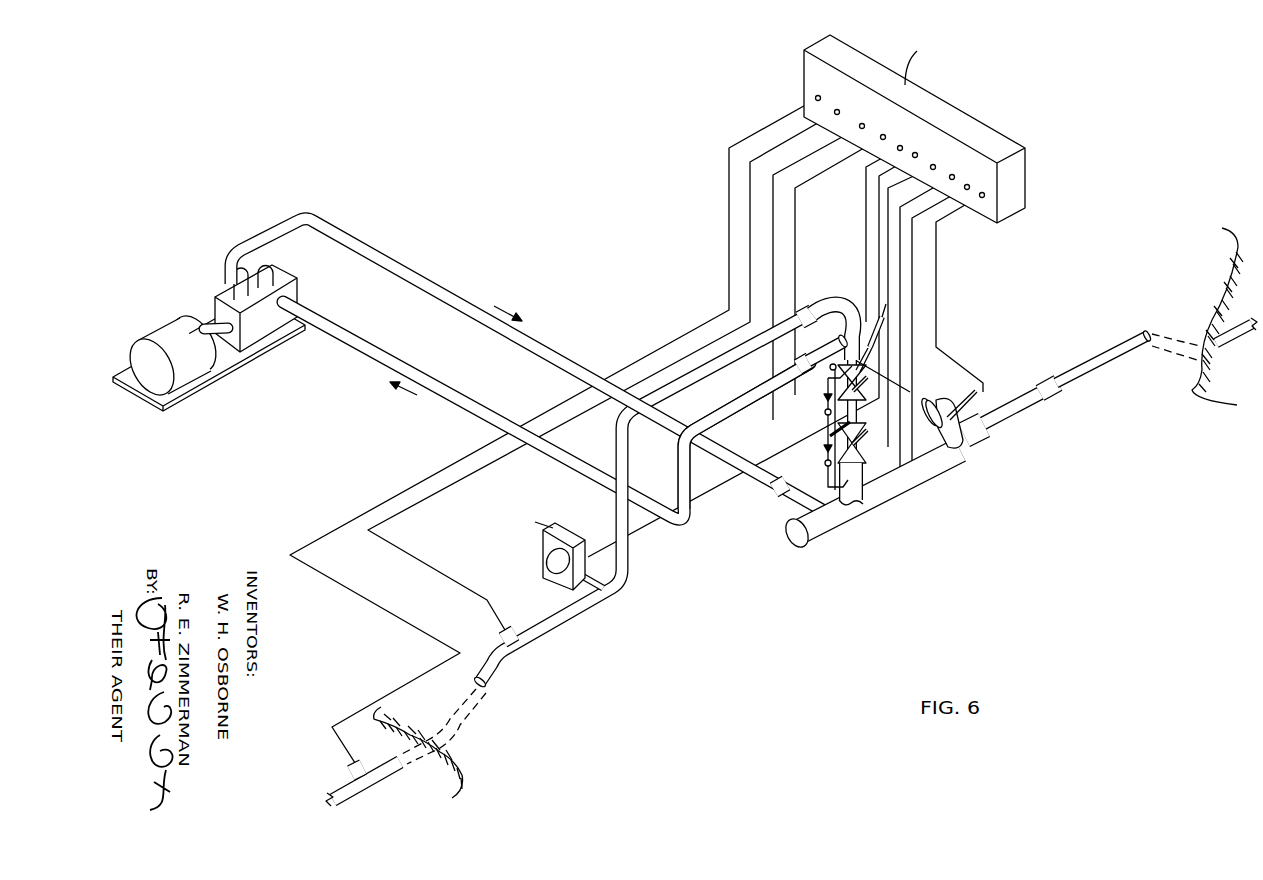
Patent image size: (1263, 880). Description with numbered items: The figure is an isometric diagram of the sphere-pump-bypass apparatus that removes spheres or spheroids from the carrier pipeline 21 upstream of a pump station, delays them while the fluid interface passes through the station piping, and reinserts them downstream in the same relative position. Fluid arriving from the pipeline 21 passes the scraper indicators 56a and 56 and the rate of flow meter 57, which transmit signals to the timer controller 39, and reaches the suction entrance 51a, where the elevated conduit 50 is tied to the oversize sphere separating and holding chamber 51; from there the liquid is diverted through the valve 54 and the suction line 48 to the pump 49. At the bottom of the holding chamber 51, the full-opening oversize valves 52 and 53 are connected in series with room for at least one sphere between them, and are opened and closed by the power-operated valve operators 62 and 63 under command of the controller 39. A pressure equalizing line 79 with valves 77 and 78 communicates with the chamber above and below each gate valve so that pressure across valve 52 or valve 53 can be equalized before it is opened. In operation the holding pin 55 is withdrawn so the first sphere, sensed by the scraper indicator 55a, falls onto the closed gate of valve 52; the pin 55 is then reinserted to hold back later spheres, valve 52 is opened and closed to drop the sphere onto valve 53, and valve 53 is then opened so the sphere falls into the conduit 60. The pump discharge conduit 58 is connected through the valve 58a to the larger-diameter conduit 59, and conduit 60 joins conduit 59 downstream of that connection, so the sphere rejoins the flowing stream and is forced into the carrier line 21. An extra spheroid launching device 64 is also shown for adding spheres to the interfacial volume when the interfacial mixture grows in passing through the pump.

The timer controller 39 is at (812, 76).
The pump 49 is at (215, 310).
The suction line 48 is at (350, 344).
The pump discharge conduit 58 is at (366, 249).
The valve 58a is at (778, 497).
The elevated conduit 50 is at (701, 380).
The valve 54 is at (773, 371).
The sphere separating and holding chamber 51 is at (841, 298).
The suction entrance 51a is at (845, 347).
The valve 52 is at (863, 398).
The valve 53 is at (863, 457).
The sphere holding pin 55 is at (873, 358).
The scraper indicator 55a is at (826, 368).
The valve operator 62 is at (868, 387).
The valve operator 63 is at (868, 440).
The valve 77 is at (825, 412).
The valve 78 is at (825, 460).
The pressure equalizing line 79 is at (830, 432).
The conduit 60 is at (858, 500).
The conduit 59 is at (912, 489).
The extra spheroid launching device 64 is at (960, 438).
The carrier pipeline 21 is at (492, 679).
The rate of flow meter 57 is at (542, 551).
The scraper indicator 56 is at (504, 633).
The scraper indicator 56a is at (350, 771).